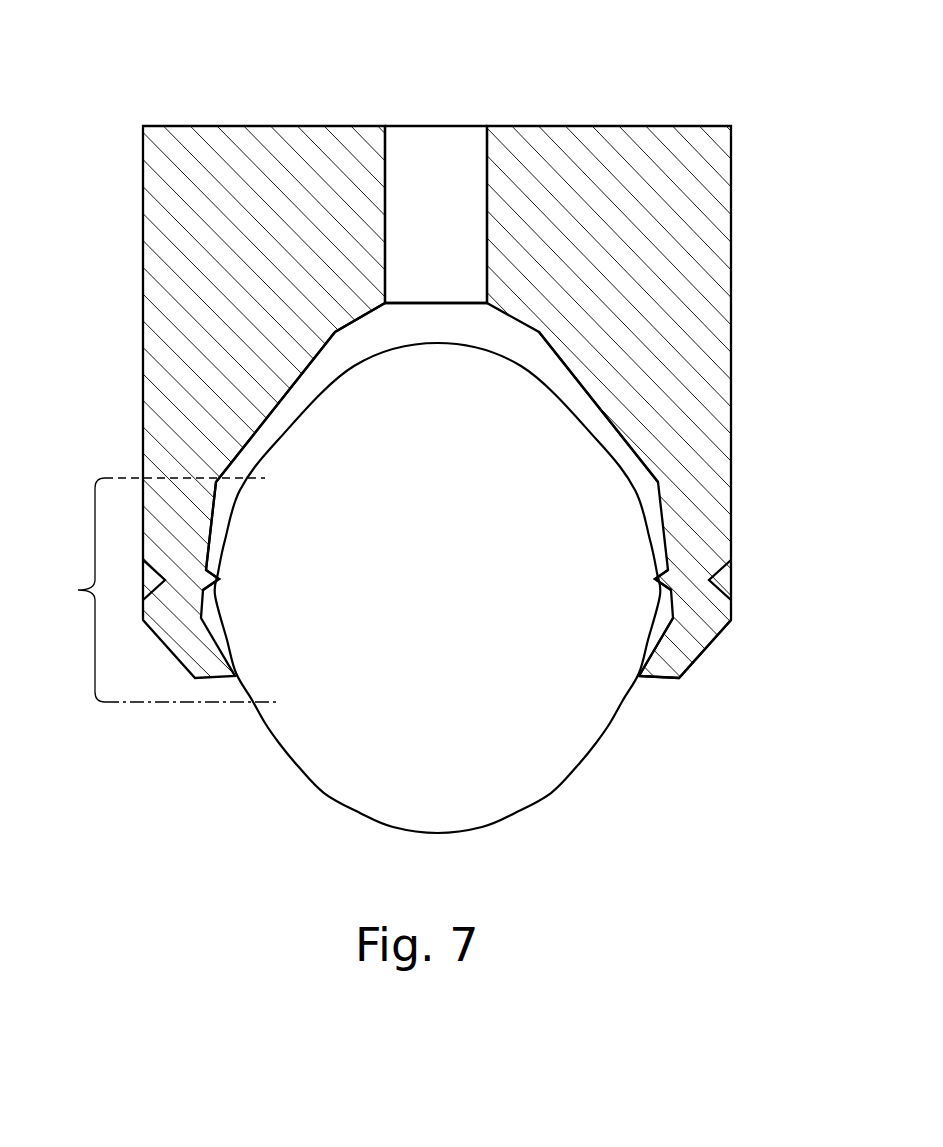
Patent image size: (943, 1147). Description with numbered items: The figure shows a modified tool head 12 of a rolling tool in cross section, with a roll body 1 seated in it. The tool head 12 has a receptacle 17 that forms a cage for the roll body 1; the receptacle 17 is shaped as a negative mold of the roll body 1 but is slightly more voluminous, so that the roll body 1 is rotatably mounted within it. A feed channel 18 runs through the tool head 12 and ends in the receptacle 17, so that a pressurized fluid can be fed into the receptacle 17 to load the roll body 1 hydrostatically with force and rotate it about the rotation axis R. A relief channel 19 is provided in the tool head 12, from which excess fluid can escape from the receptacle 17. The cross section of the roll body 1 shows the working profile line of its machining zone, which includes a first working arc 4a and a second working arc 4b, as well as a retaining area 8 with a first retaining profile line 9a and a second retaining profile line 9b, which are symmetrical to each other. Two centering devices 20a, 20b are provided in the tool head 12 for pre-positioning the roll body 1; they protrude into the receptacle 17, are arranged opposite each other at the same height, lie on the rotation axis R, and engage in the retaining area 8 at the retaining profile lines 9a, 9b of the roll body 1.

The roll body 1 is at (273, 774).
The tool head 12 is at (196, 86).
The feed channel 18 is at (442, 148).
The receptacle 17 is at (367, 332).
The first working arc 4a is at (320, 371).
The second working arc 4b is at (523, 351).
The first retaining profile line 9a is at (222, 513).
The second retaining profile line 9b is at (653, 656).
The retaining area 8 is at (168, 590).
The first centering device 20a is at (218, 577).
The second centering device 20b is at (658, 578).
The rotation axis R is at (660, 584).
The relief channel 19 is at (690, 648).